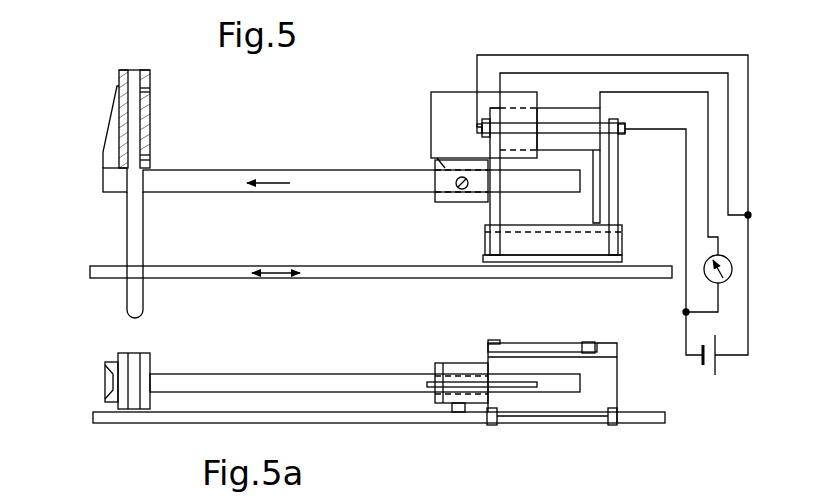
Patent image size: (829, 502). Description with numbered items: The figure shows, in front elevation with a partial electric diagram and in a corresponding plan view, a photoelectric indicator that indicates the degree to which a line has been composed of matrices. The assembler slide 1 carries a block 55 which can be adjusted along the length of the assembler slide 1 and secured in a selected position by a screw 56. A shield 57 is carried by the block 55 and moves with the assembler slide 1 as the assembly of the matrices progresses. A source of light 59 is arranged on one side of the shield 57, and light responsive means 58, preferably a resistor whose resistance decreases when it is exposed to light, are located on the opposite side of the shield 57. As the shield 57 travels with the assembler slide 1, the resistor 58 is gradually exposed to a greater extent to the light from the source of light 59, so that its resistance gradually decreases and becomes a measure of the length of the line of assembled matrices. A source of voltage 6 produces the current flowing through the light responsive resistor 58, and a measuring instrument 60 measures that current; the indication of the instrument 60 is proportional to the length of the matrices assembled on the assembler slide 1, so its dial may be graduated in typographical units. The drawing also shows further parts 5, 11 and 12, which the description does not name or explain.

In FIG. 5, the assembler slide 1 is at (113, 178).
In FIG. 5A, the assembler slide 1 is at (313, 383).
In FIG. 5, the carriage plate 5 is at (275, 278).
In FIG. 5A, the carriage plate 5 is at (643, 420).
In FIG. 5, the source of voltage 6 is at (710, 360).
In FIG. 5, the clamping jaws 11 is at (122, 72).
In FIG. 5, the stem 12 is at (132, 293).
In FIG. 5, the block 55 is at (443, 184).
In FIG. 5A, the block 55 is at (457, 368).
In FIG. 5, the screw 56 is at (463, 190).
In FIG. 5A, the screw 56 is at (458, 413).
In FIG. 5, the shield 57 is at (447, 100).
In FIG. 5A, the shield 57 is at (522, 388).
In FIG. 5, the light responsive means 58 is at (573, 117).
In FIG. 5A, the light responsive means 58 is at (550, 350).
In FIG. 5, the source of light 59 is at (520, 130).
In FIG. 5A, the source of light 59 is at (558, 420).
In FIG. 5, the measuring instrument 60 is at (722, 283).